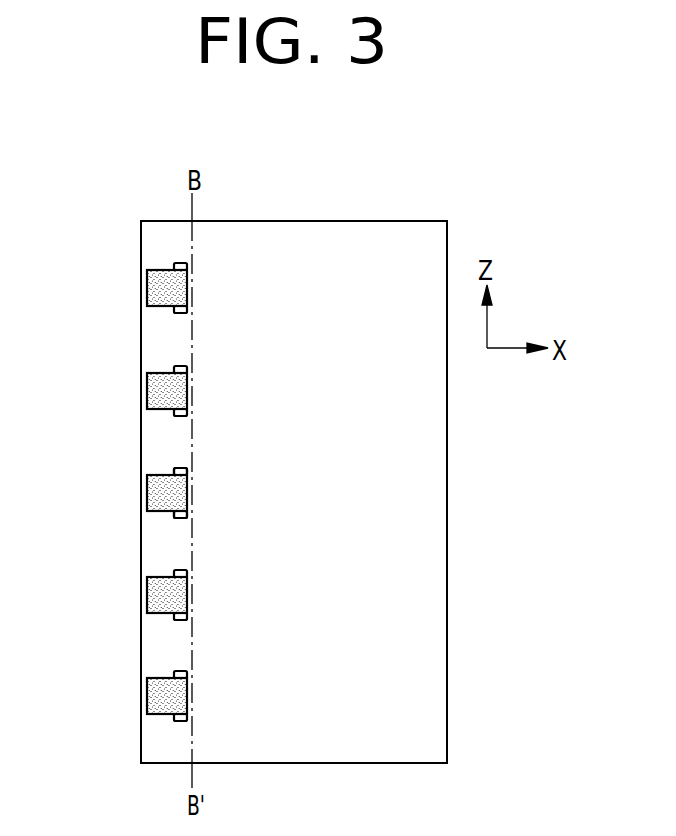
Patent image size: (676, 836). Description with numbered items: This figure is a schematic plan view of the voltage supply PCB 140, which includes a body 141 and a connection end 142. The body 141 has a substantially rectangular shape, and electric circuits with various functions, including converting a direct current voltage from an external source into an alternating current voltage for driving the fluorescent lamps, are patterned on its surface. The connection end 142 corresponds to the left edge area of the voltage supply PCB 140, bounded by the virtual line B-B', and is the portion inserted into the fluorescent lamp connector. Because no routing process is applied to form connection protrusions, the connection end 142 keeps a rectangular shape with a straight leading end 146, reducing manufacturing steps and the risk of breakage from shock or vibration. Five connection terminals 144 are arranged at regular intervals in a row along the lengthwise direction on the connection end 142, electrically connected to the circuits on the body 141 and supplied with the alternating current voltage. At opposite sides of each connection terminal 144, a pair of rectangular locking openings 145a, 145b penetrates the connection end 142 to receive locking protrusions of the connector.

The voltage supply PCB 140 is at (122, 189).
The body 141 is at (437, 514).
The connection end 142 is at (158, 338).
The connection terminal 144 is at (157, 493).
The locking opening 145a is at (178, 518).
The locking opening 145b is at (178, 468).
The leading end 146 is at (141, 637).